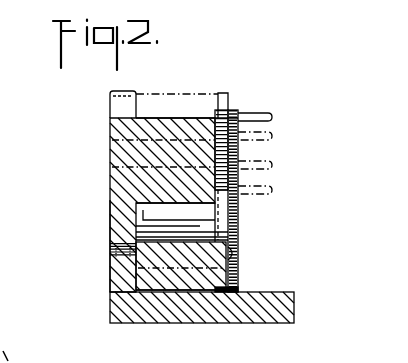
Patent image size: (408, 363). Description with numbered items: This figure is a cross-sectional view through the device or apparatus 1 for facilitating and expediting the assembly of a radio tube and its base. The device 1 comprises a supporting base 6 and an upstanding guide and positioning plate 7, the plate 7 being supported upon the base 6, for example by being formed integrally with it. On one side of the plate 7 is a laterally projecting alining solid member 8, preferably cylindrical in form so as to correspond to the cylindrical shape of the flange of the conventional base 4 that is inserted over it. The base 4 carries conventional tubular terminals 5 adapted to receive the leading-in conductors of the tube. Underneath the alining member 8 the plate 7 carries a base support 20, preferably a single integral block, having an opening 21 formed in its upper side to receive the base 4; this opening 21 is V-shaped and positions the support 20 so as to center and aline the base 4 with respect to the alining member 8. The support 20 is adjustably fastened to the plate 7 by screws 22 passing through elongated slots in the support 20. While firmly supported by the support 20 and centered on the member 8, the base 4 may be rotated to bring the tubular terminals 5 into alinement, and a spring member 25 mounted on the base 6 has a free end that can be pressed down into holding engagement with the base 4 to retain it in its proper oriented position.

The device or apparatus 1 is at (110, 153).
The base 4 is at (199, 95).
The tubular terminals 5 is at (265, 117).
The supporting base 6 is at (243, 320).
The guide and positioning plate 7 is at (112, 223).
The alining solid member 8 is at (144, 116).
The base support 20 is at (198, 282).
The opening 21 is at (218, 214).
The screws 22 is at (236, 256).
The spring member 25 is at (238, 155).